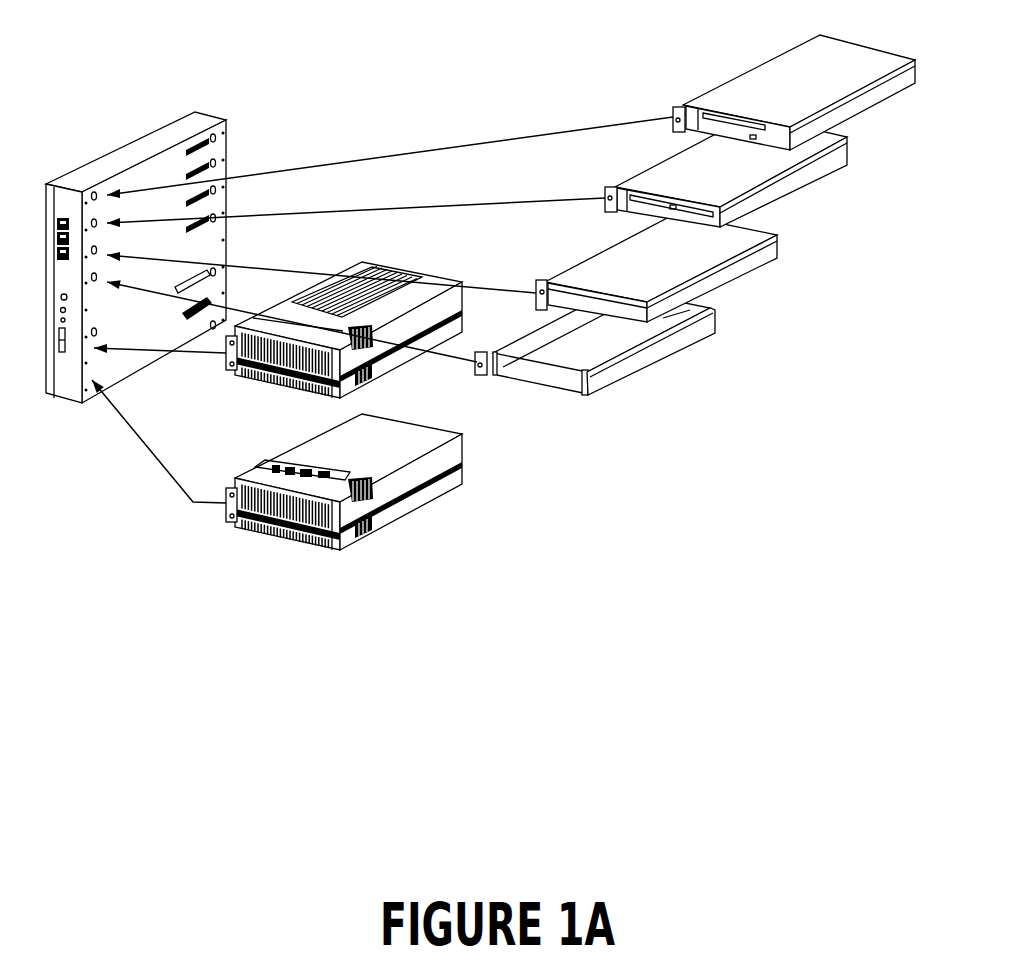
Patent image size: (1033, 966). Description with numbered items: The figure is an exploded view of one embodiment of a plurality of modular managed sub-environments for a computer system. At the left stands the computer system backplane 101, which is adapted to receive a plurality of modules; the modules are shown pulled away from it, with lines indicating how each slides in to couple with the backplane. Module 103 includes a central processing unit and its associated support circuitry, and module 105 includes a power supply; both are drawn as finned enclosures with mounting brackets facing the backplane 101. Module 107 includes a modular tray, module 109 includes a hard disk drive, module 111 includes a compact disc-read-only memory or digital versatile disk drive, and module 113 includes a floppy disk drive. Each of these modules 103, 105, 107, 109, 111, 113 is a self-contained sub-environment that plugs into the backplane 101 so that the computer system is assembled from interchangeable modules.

The computer system backplane 101 is at (128, 143).
The module 103 is at (388, 350).
The module 105 is at (408, 493).
The module 107 is at (647, 366).
The module 109 is at (737, 280).
The module 111 is at (803, 183).
The module 113 is at (747, 70).